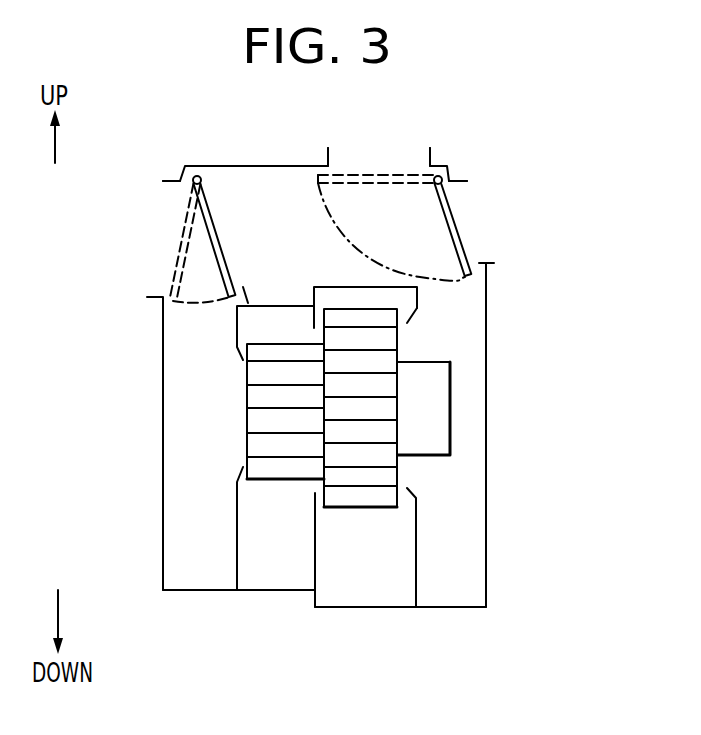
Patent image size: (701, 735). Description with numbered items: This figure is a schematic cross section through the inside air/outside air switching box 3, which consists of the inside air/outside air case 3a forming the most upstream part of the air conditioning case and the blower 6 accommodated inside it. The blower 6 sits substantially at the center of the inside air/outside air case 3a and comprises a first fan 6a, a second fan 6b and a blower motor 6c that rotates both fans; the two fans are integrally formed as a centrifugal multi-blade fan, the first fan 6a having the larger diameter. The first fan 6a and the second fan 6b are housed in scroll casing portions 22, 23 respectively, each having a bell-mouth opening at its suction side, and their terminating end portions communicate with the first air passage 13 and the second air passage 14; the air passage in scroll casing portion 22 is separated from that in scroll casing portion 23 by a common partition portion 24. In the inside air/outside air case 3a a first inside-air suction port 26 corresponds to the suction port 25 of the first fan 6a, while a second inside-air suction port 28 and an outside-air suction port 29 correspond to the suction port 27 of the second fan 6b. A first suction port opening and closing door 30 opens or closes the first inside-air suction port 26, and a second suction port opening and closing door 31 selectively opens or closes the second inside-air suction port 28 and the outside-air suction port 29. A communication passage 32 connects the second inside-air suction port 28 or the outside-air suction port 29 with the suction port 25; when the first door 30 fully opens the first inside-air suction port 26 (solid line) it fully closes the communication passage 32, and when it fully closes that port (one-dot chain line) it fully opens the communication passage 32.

The inside air/outside air switching box 3 is at (450, 154).
The inside air/outside air case 3a is at (487, 433).
The blower 6 is at (432, 324).
The first fan 6a is at (263, 425).
The second fan 6b is at (398, 477).
The blower motor 6c is at (437, 398).
The first air passage 13 is at (267, 573).
The second air passage 14 is at (400, 590).
The scroll casing portion 22 is at (283, 303).
The scroll casing portion 23 is at (350, 287).
The partition wall 24 is at (315, 568).
The suction port 25 is at (245, 447).
The first inside-air suction port 26 is at (173, 250).
The suction port 27 is at (400, 352).
The second inside-air suction port 28 is at (481, 246).
The outside-air suction port 29 is at (367, 165).
The first suction port opening and closing door 30 is at (208, 239).
The second suction port opening and closing door 31 is at (467, 228).
The communication passage 32 is at (245, 210).